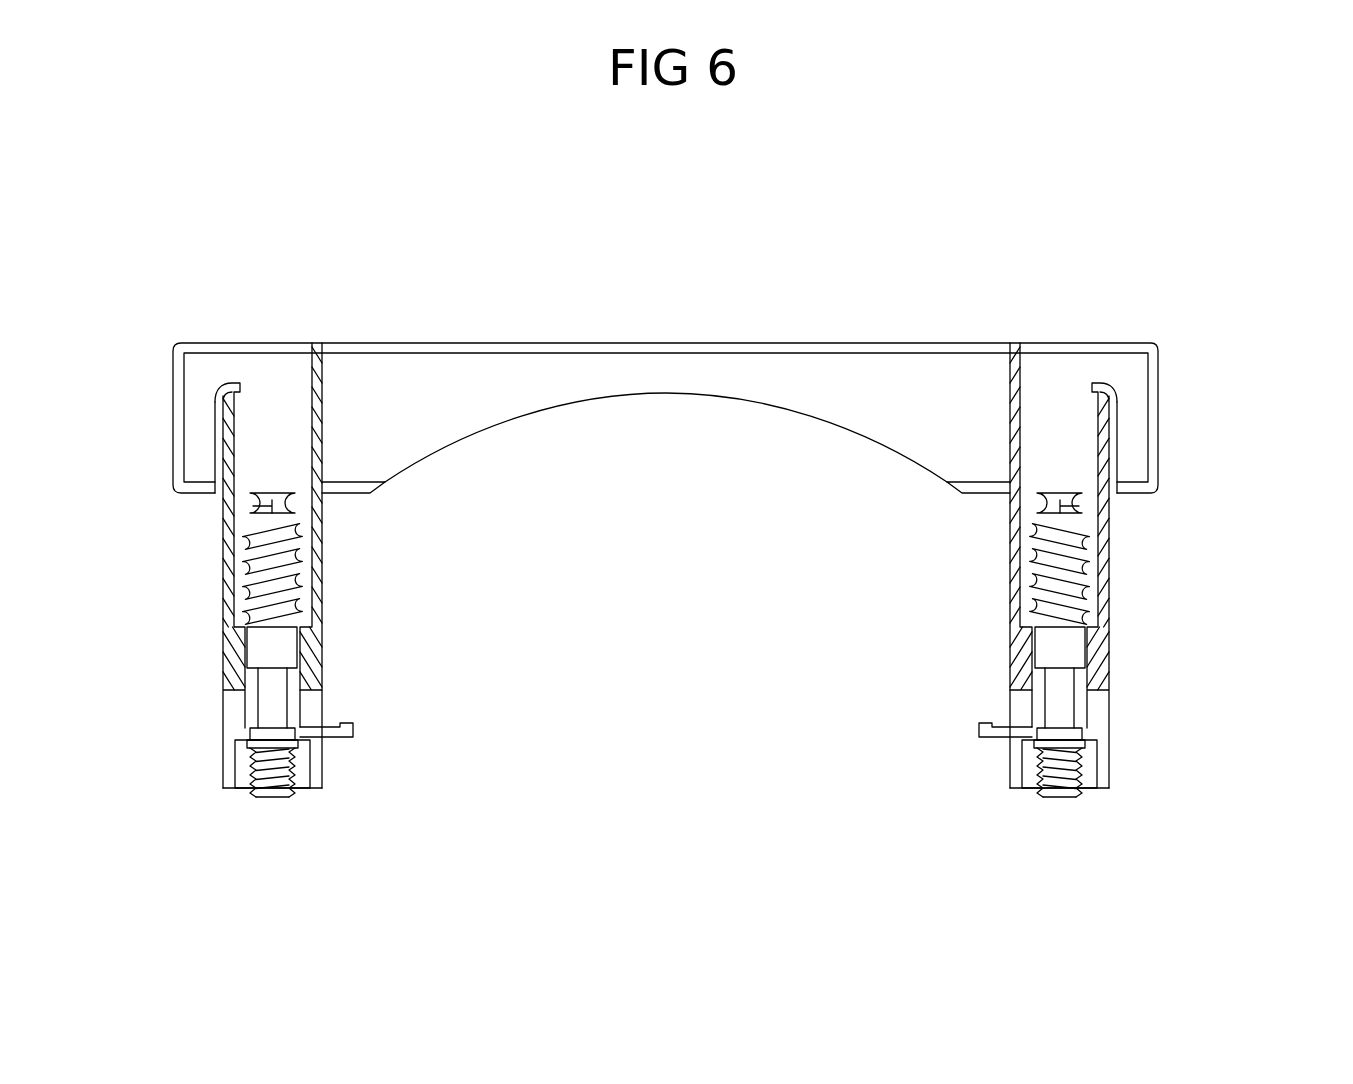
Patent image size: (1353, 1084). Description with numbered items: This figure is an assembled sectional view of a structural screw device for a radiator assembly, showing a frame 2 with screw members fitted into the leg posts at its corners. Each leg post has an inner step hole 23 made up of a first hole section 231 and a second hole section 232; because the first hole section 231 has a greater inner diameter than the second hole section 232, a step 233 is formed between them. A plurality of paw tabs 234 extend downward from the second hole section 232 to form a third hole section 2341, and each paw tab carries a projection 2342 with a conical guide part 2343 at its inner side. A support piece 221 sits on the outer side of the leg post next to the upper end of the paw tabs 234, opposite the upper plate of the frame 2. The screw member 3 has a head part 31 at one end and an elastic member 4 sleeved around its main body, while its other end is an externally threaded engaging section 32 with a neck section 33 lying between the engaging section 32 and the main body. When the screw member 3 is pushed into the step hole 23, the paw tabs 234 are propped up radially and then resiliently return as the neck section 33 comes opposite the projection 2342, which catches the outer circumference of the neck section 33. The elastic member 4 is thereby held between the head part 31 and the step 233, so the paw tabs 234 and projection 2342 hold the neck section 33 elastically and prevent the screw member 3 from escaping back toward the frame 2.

The frame 2 is at (722, 375).
The step hole 23 is at (1170, 498).
The first hole section 231 is at (1100, 440).
The second hole section 232 is at (1078, 680).
The step 233 is at (312, 606).
The support piece 221 is at (340, 725).
The paw tabs 234 is at (315, 770).
The third hole section 2341 is at (1072, 845).
The projection 2342 is at (1093, 738).
The conical guide part 2343 is at (1043, 731).
The screw member 3 is at (192, 638).
The head part 31 is at (209, 551).
The engaging section 32 is at (257, 773).
The neck section 33 is at (270, 712).
The elastic member 4 is at (240, 500).